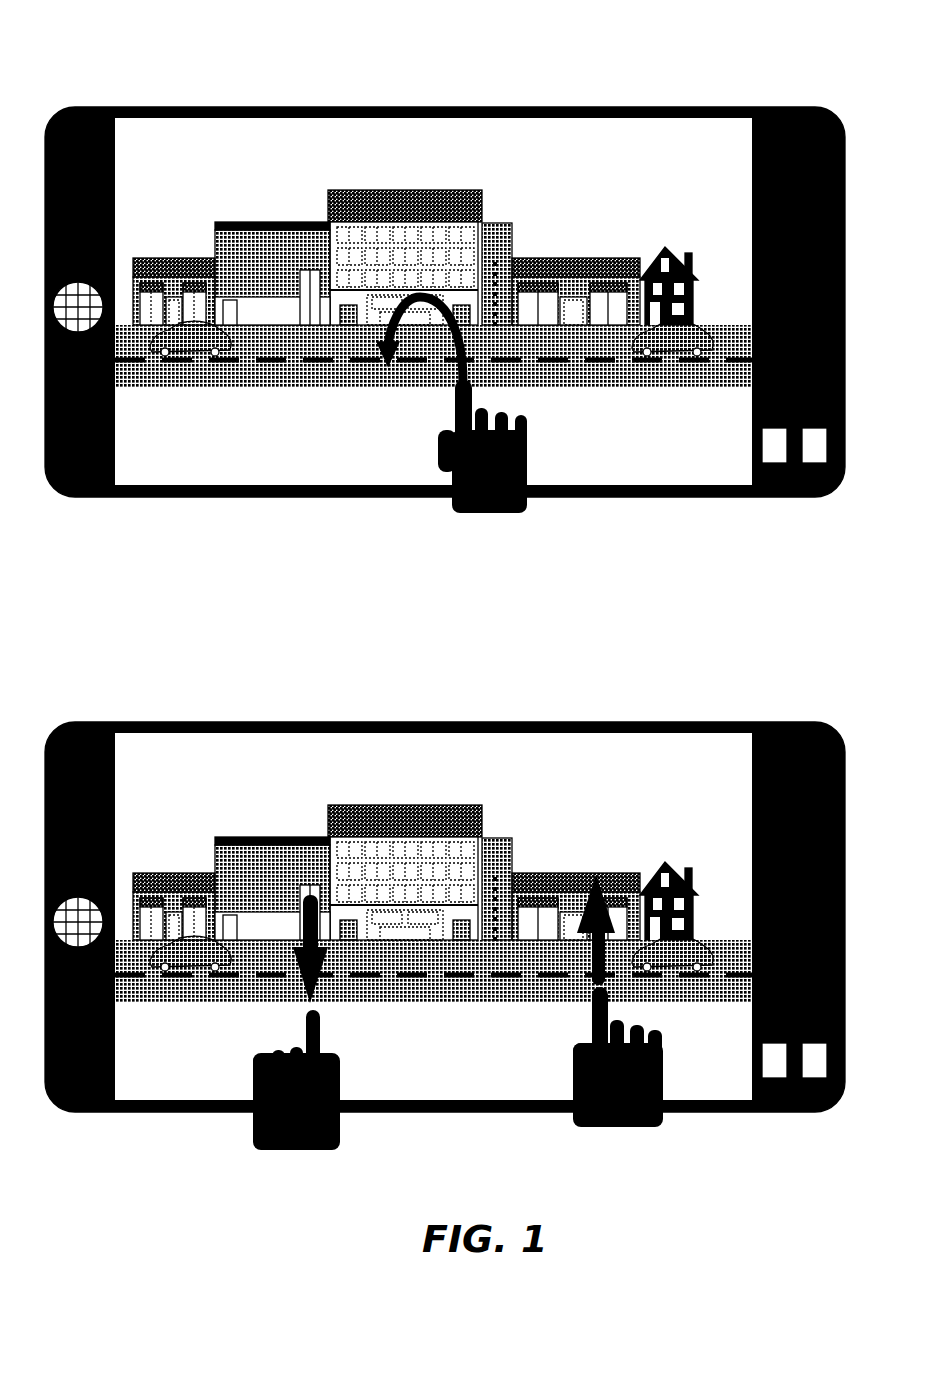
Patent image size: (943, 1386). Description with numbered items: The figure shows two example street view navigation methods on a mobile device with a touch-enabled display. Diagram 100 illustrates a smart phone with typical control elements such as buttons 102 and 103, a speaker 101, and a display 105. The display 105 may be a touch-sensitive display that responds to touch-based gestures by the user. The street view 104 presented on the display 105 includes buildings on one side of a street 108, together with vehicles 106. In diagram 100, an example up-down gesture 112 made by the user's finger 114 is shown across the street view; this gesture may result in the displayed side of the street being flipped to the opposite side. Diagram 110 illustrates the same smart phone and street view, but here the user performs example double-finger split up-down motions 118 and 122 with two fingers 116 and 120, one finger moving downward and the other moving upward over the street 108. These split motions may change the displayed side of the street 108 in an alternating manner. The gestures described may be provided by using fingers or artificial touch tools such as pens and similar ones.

The diagram 100 is at (702, 55).
The speaker 101 is at (80, 355).
The button 102 is at (790, 166).
The button 103 is at (778, 422).
The street view 104 is at (278, 186).
The display 105 is at (305, 133).
The vehicles 106 is at (197, 360).
The street 108 is at (648, 386).
The diagram 110 is at (702, 670).
The up-down gesture 112 is at (385, 377).
The finger 114 is at (518, 540).
The finger 116 is at (313, 1163).
The up-down motion 118 is at (306, 998).
The finger 120 is at (655, 1150).
The up-down motion 122 is at (594, 863).